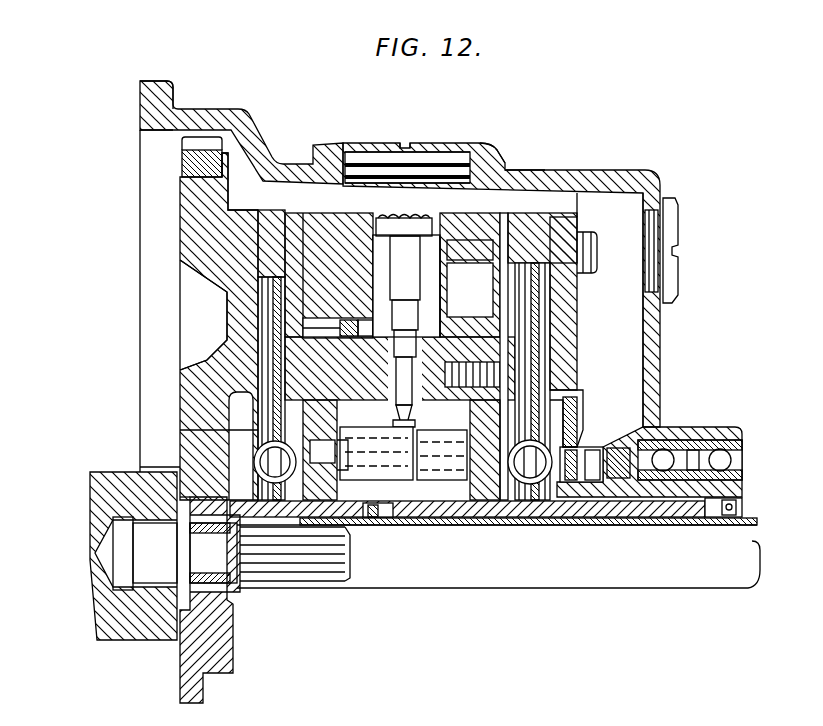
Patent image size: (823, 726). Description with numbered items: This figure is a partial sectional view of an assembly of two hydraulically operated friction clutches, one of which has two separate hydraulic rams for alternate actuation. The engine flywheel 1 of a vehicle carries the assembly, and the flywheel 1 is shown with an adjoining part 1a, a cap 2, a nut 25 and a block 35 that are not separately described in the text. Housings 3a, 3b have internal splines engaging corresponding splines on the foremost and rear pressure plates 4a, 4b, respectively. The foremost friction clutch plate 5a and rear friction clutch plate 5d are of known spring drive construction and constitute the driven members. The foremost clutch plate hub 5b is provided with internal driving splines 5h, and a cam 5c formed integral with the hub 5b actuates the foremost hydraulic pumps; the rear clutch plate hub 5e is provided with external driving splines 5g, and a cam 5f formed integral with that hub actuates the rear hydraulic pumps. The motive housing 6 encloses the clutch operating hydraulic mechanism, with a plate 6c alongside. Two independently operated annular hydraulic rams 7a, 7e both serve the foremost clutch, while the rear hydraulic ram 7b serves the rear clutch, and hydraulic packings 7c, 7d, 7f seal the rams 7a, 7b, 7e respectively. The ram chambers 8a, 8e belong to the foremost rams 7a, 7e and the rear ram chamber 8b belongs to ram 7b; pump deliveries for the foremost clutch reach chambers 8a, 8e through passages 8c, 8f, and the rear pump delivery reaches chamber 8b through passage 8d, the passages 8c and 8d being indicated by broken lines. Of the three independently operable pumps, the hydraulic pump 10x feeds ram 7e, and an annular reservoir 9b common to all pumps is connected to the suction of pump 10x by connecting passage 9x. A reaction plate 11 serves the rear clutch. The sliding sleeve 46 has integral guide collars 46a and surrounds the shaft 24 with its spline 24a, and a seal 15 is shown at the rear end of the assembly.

The engine flywheel 1 is at (203, 260).
The housing flange 1a is at (113, 487).
The cap 2 is at (182, 160).
The foremost housing 3a is at (263, 253).
The rear housing 3b is at (587, 213).
The foremost pressure plate 4a is at (277, 328).
The rear pressure plate 4b is at (590, 243).
The foremost friction clutch plate 5a is at (267, 400).
The foremost clutch plate hub 5b is at (203, 450).
The cam 5c is at (347, 503).
The rear friction clutch plate 5d is at (550, 395).
The rear clutch plate hub 5e is at (620, 423).
The cam 5f is at (447, 493).
The external driving splines 5g is at (650, 452).
The internal driving splines 5h is at (203, 487).
The motive housing 6 is at (325, 258).
The plate 6c is at (640, 220).
The foremost hydraulic ram 7a is at (290, 218).
The rear hydraulic ram 7b is at (556, 233).
The hydraulic packing 7c is at (312, 215).
The hydraulic packing 7d is at (470, 275).
The foremost hydraulic ram 7e is at (262, 218).
The hydraulic packing 7f is at (353, 318).
The ram chamber 8a is at (373, 317).
The rear ram chamber 8b is at (480, 277).
The passage 8c is at (378, 152).
The passage 8d is at (445, 315).
The ram chamber 8e is at (372, 318).
The passage 8f is at (389, 270).
The annular reservoir 9b is at (520, 203).
The connecting passage 9x is at (443, 233).
The hydraulic pump 10x is at (397, 243).
The reaction plate 11 is at (563, 300).
The seal 15 is at (742, 520).
The shaft 24 is at (650, 560).
The spline 24a is at (343, 560).
The nut 25 is at (210, 527).
The lid block 35 is at (158, 81).
The sliding sleeve 46 is at (538, 525).
The guide collars 46a is at (417, 520).